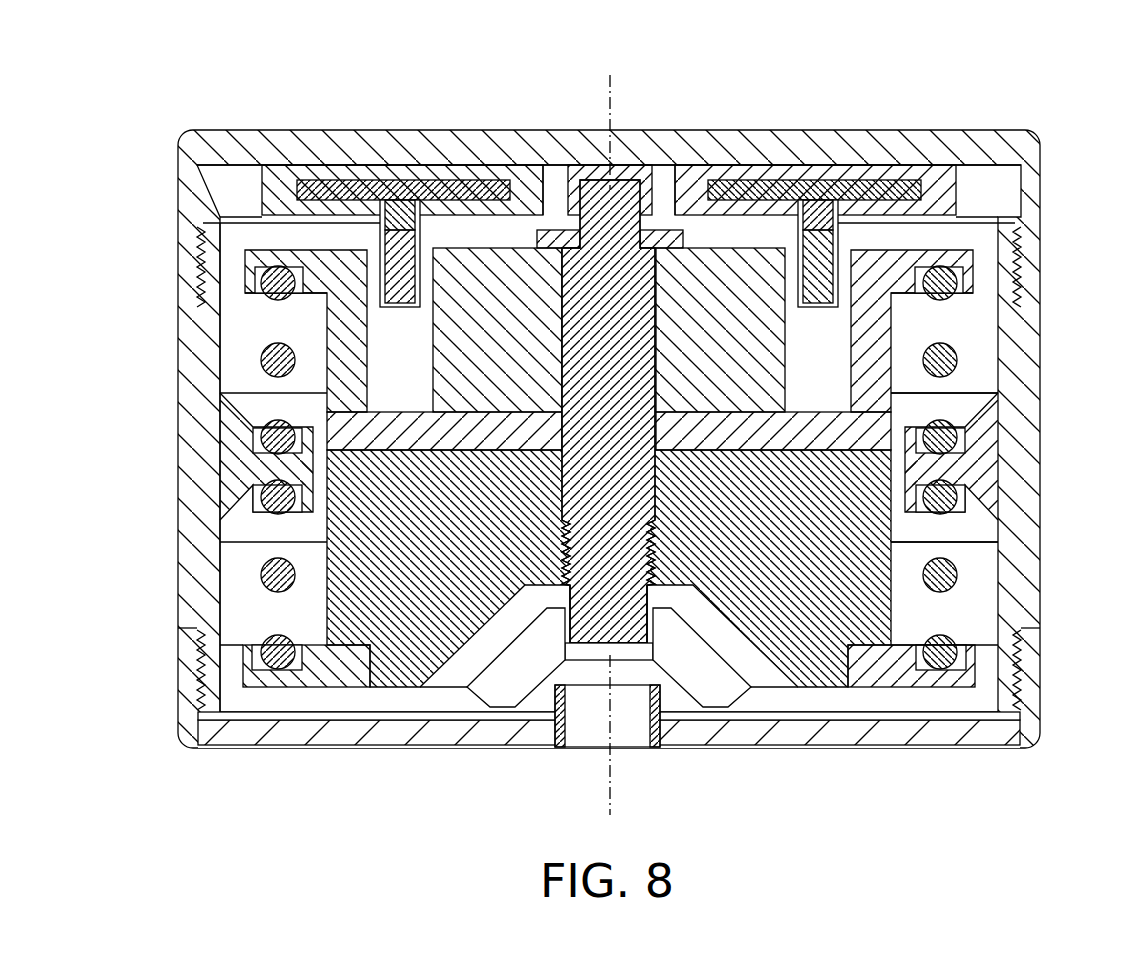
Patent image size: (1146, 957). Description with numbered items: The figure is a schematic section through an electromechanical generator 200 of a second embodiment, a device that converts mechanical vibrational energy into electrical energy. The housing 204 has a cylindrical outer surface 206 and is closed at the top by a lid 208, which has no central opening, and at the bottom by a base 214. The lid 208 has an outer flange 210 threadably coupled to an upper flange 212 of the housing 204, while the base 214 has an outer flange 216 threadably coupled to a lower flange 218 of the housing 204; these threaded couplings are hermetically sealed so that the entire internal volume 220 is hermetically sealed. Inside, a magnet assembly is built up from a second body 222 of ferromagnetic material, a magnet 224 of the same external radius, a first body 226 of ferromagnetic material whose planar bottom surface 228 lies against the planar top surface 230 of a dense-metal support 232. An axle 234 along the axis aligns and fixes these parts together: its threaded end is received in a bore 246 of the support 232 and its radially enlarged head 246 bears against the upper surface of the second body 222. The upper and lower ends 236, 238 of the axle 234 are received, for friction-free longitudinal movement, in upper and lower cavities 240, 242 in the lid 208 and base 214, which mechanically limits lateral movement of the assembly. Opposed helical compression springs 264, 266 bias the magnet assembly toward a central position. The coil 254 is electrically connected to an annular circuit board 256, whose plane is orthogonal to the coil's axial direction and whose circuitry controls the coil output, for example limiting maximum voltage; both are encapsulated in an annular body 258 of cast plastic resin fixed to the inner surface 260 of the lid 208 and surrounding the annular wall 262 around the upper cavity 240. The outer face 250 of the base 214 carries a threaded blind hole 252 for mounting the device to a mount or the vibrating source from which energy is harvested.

The electromechanical generator 200 is at (605, 445).
The housing 204 is at (566, 444).
The cylindrical outer surface 206 is at (185, 488).
The lid 208 is at (883, 143).
The outer flange 210 is at (1037, 233).
The upper flange 212 is at (1010, 283).
The base 214 is at (198, 740).
The outer flange 216 is at (186, 664).
The lower flange 218 is at (217, 640).
The internal volume 220 is at (987, 557).
The second body of ferromagnetic material 222 is at (757, 255).
The magnet 224 is at (435, 385).
The first body of ferromagnetic material 226 is at (880, 328).
The planar bottom surface 228 is at (843, 440).
The planar top surface 230 is at (897, 525).
The support 232 is at (370, 652).
The axle 234 is at (673, 230).
The upper end of the axle 236 is at (603, 183).
The lower end of the axle 238 is at (595, 617).
The upper cavity 240 is at (628, 275).
The lower cavity 242 is at (627, 653).
The bore / radially enlarged head 246 is at (515, 603).
The outer face 250 is at (913, 740).
The threaded blind hole 252 is at (583, 727).
The coil 254 is at (403, 307).
The annular circuit board 256 is at (438, 185).
The annular body 258 is at (277, 175).
The inner surface 260 is at (237, 165).
The annular wall 262 is at (557, 177).
The helical compression spring 264 is at (262, 352).
The helical compression spring 266 is at (957, 587).